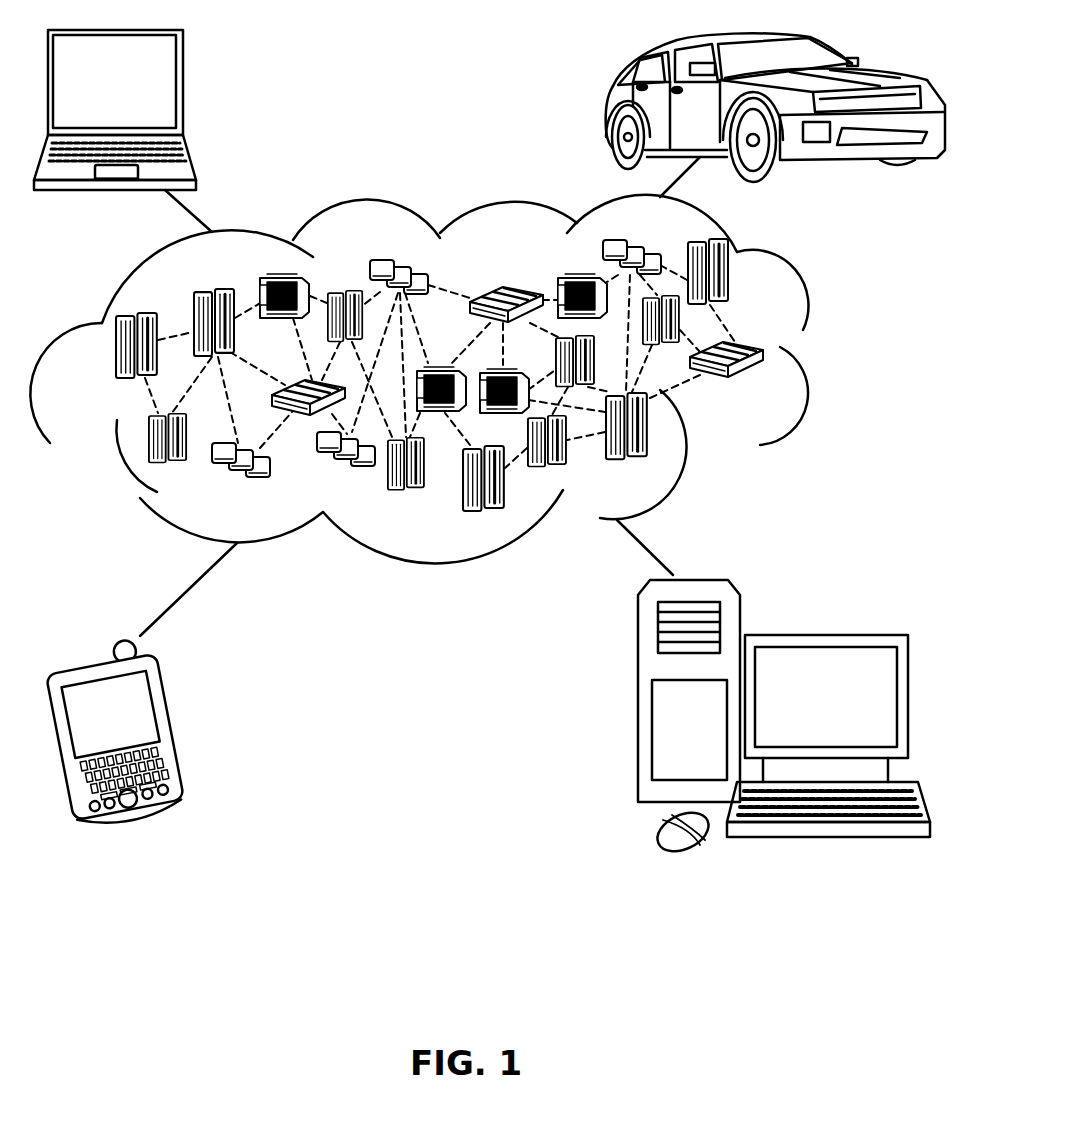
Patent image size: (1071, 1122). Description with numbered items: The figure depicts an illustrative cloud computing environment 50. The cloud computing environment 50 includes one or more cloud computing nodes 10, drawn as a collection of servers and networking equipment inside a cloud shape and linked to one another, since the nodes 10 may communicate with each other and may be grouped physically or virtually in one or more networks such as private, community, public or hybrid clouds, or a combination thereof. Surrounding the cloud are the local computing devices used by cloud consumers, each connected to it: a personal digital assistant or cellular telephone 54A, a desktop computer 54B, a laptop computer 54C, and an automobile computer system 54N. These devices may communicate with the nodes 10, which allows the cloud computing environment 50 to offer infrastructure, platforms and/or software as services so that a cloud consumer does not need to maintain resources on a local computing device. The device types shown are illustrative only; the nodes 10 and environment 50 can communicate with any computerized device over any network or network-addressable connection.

The cloud computing node 10 is at (768, 383).
The cloud computing environment 50 is at (825, 357).
The personal digital assistant or cellular telephone 54A is at (172, 727).
The desktop computer 54B is at (825, 633).
The laptop computer 54C is at (183, 90).
The automobile computer system 54N is at (607, 104).